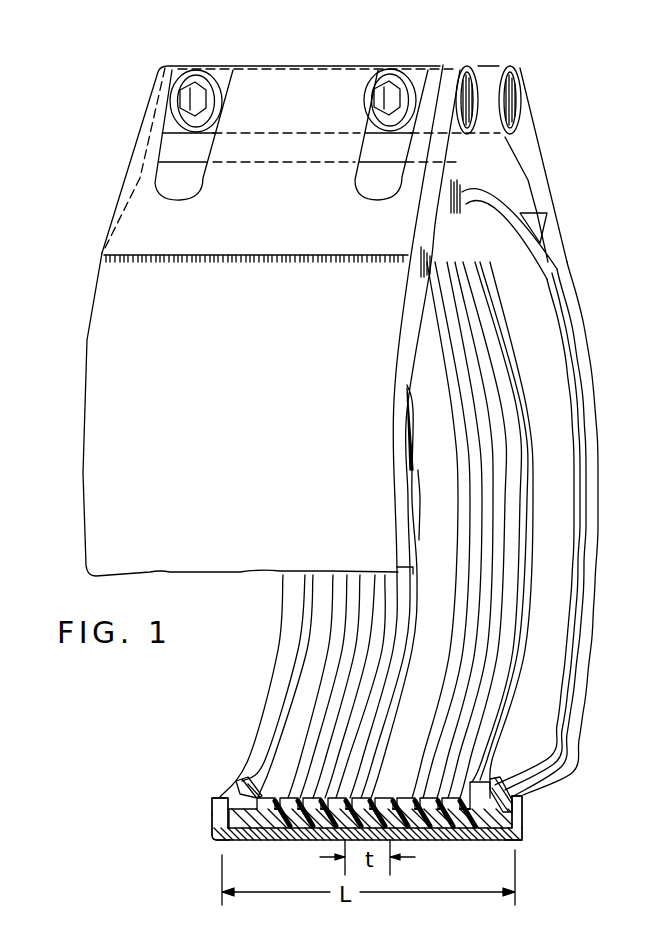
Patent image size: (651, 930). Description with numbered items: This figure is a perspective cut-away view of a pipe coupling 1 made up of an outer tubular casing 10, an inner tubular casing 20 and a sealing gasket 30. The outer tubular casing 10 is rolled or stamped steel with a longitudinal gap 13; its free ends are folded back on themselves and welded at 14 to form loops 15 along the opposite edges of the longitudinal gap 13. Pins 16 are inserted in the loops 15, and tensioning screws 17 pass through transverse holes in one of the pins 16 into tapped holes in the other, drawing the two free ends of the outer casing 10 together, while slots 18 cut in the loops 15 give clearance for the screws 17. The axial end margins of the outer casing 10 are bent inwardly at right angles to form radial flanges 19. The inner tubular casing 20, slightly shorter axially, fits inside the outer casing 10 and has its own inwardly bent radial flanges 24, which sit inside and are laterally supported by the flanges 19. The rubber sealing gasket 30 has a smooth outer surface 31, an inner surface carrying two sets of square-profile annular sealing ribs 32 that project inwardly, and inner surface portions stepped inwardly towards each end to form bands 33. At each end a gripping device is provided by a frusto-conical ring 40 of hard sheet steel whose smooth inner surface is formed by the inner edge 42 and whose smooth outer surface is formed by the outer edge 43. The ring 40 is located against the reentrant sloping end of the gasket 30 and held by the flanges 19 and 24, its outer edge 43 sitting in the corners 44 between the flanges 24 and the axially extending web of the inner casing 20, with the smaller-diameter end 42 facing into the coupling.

The pipe coupling 1 is at (568, 250).
The outer tubular casing 10 is at (238, 437).
The longitudinal gap 13 is at (482, 177).
The weld 14 is at (248, 258).
The loops 15 is at (140, 143).
The pins 16 is at (527, 95).
The tensioning screws 17 is at (380, 92).
The slots 18 is at (152, 188).
The radial flanges 19 is at (213, 826).
The inner tubular casing 20 is at (250, 843).
The radial flanges 24 is at (212, 806).
The sealing gasket 30 is at (372, 798).
The outer surface 31 is at (291, 840).
The annular sealing ribs 32 is at (443, 810).
The bands 33 is at (519, 838).
The frusto-conical ring 40 is at (240, 782).
The inner edge 42 is at (490, 778).
The outer edge 43 is at (514, 818).
The corners 44 is at (216, 842).